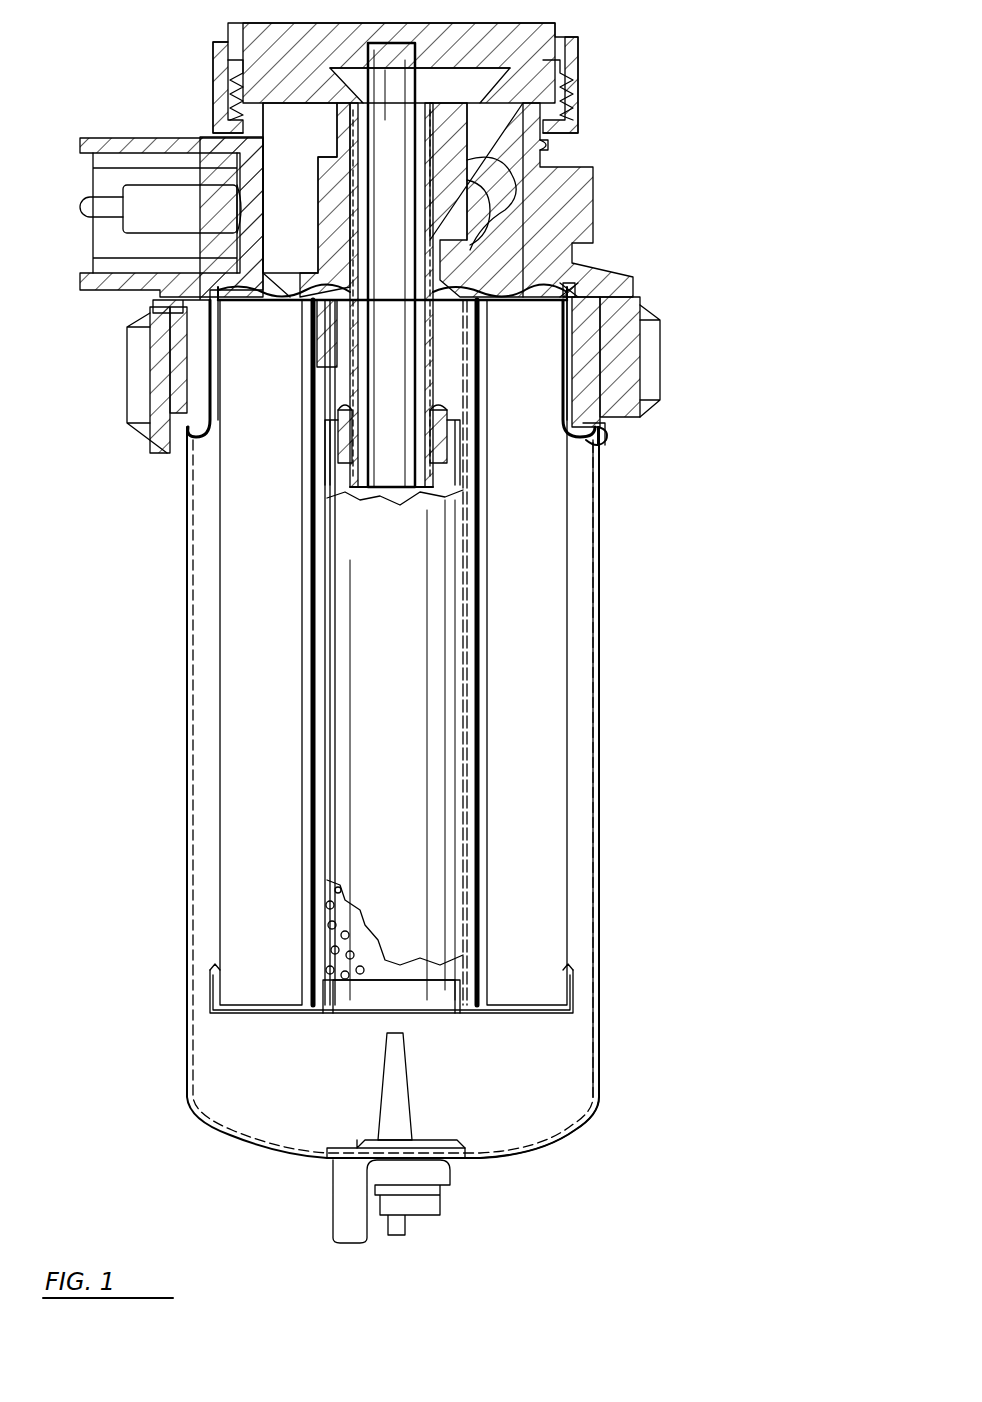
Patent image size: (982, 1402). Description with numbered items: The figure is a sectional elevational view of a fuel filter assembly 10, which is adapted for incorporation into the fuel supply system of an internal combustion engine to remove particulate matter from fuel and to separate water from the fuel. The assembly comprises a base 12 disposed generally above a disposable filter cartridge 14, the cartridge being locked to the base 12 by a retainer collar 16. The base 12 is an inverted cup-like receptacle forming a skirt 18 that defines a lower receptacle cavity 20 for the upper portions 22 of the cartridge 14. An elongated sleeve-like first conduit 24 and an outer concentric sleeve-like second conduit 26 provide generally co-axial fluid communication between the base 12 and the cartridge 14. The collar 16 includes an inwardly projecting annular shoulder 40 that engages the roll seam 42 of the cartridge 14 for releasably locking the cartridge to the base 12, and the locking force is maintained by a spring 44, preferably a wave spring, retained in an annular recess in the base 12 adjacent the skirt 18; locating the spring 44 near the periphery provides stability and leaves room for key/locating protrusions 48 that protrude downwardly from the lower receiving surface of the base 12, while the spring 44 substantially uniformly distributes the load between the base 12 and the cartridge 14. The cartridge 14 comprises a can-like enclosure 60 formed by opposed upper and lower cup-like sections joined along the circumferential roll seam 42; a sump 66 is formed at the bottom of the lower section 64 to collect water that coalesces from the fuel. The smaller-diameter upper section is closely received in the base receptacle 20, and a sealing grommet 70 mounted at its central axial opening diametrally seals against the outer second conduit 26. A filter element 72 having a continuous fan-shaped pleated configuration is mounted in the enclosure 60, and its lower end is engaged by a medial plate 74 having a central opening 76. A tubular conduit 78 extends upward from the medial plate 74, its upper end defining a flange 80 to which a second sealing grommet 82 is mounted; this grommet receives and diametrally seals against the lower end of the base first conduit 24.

The fuel filter assembly 10 is at (745, 126).
The base 12 is at (595, 192).
The disposable filter cartridge 14 is at (598, 712).
The retainer collar 16 is at (127, 372).
The skirt 18 is at (575, 335).
The lower receptacle cavity 20 is at (567, 362).
The upper portions 22 is at (228, 382).
The first conduit 24 is at (418, 490).
The second conduit 26 is at (476, 236).
The annular shoulder 40 is at (603, 445).
The roll seam 42 is at (646, 412).
The spring 44 is at (592, 275).
The key/locating protrusion 48 is at (283, 292).
The filter cartridge enclosure 60 is at (188, 535).
The lower section 64 is at (598, 862).
The sump 66 is at (527, 1125).
The sealing grommet 70 is at (310, 357).
The filter element 72 is at (240, 678).
The medial plate 74 is at (497, 1015).
The central opening 76 is at (358, 1015).
The tubular conduit 78 is at (408, 820).
The flange 80 is at (455, 410).
The second sealing grommet 82 is at (340, 468).